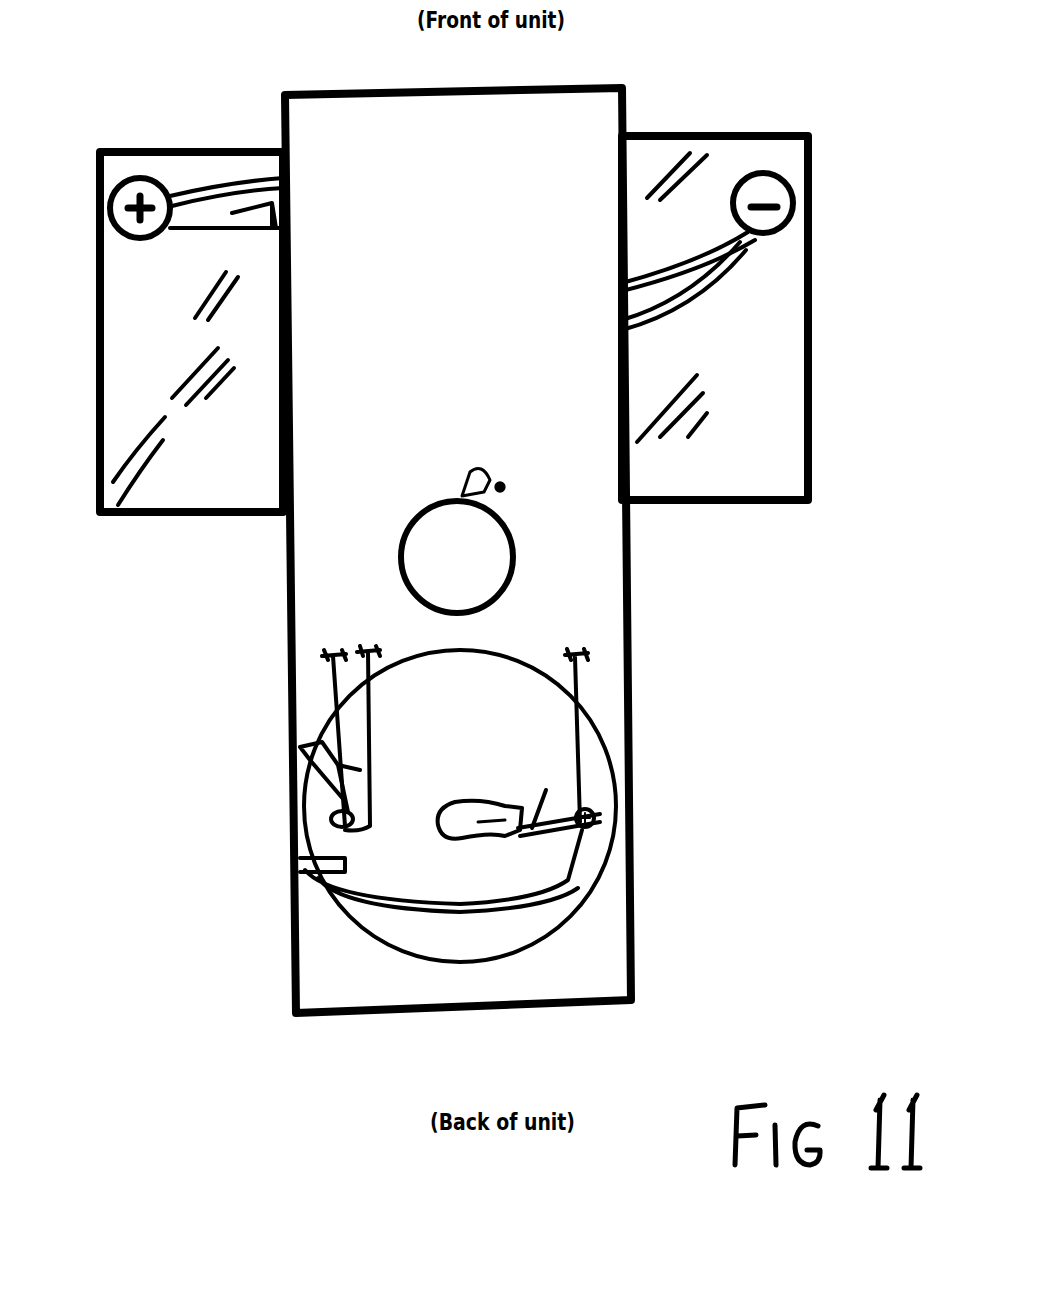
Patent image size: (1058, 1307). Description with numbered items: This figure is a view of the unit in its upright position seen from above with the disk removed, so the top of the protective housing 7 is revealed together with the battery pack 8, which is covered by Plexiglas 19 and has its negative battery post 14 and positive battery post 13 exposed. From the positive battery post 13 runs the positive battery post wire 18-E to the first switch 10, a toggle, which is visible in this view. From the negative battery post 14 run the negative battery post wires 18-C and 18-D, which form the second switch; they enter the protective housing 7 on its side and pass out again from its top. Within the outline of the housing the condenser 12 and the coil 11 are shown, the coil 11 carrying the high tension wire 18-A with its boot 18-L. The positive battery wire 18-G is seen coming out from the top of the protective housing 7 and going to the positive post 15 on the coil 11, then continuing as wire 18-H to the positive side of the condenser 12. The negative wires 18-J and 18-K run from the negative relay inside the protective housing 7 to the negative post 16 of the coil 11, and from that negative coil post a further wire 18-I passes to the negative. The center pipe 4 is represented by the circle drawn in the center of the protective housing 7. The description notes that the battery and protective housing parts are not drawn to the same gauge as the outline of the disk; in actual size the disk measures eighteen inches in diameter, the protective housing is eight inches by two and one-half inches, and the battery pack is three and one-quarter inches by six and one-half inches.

The center pipe 4 is at (447, 545).
The protective housing 7 is at (575, 603).
The battery pack 8 is at (145, 343).
The #1 switch 10 is at (138, 230).
The coil 11 is at (530, 915).
The condenser 12 is at (315, 861).
The positive battery post 13 is at (130, 197).
The negative battery post 14 is at (768, 190).
The positive post on the coil 15 is at (600, 820).
The negative post of the coil 16 is at (345, 830).
The Plexiglas cover 19 is at (190, 371).
The high tension wire 18-A is at (545, 800).
The negative battery post wire 18-C is at (700, 258).
The negative battery post wire 18-D is at (690, 272).
The positive battery post wire 18-E is at (200, 190).
The positive battery wire 18-G is at (575, 712).
The positive battery wire continuation to condenser 18-H is at (320, 890).
The negative wire from coil post 18-I is at (335, 757).
The negative wire 18-J is at (335, 688).
The negative wire 18-K is at (368, 716).
The boot 18-L is at (590, 812).